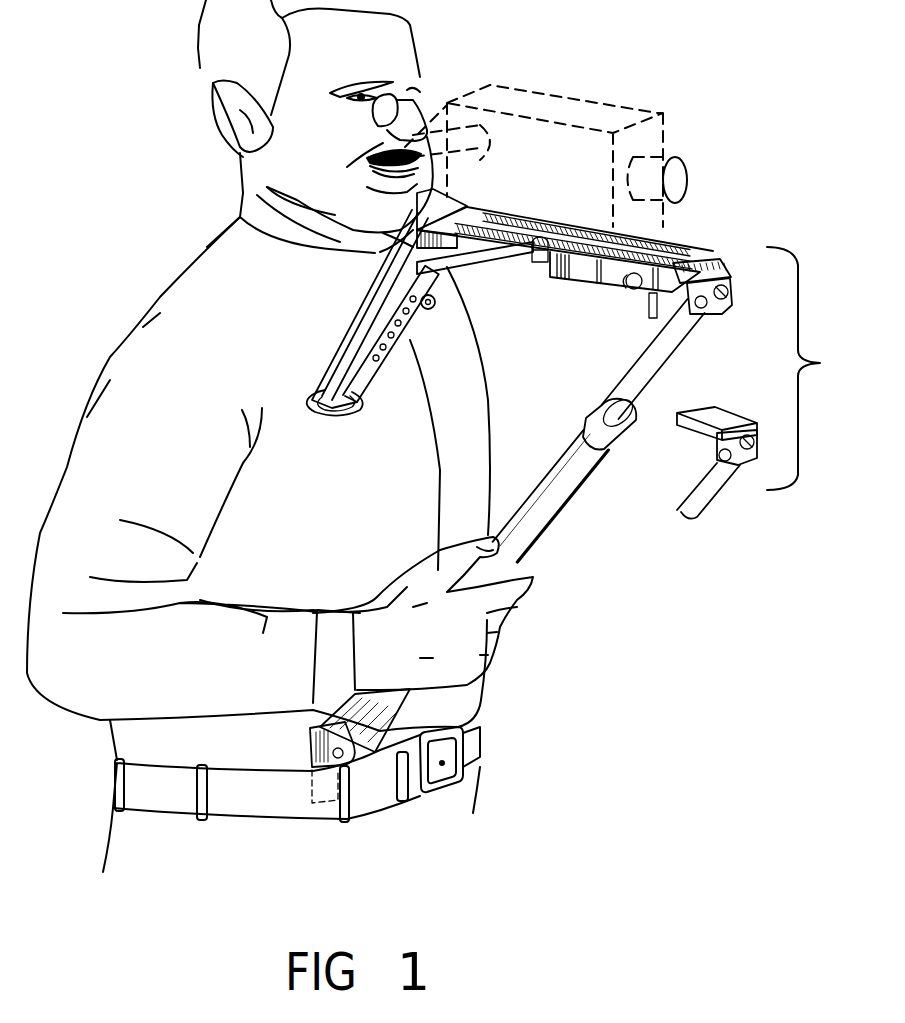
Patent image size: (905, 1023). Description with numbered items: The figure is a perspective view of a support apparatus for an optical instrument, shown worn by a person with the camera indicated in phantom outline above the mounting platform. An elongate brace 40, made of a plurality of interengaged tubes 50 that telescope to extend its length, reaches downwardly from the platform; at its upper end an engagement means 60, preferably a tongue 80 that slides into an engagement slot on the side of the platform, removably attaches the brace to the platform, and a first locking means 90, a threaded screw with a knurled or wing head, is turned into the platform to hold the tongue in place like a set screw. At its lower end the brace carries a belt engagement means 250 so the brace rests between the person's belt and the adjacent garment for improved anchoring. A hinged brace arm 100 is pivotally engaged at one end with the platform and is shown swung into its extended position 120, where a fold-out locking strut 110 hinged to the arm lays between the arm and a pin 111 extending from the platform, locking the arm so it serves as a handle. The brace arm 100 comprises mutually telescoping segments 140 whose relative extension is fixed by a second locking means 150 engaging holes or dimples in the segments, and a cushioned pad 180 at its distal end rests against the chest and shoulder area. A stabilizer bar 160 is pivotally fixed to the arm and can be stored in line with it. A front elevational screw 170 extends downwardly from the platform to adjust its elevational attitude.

The elongate brace 40 is at (628, 446).
The interengaged tubes 50 is at (697, 320).
The engagement means 60 is at (733, 250).
The tongue 80 is at (703, 412).
The first locking means 90 is at (627, 290).
The hinged brace arm 100 is at (351, 327).
The fold-out locking strut 110 is at (455, 272).
The pin 111 is at (543, 260).
The extended position 120 is at (457, 319).
The segments 140 is at (367, 400).
The second locking means 150 is at (427, 311).
The stabilizer bar 160 is at (320, 367).
The cushioned pad 180 is at (313, 413).
The front elevational screw 170 is at (643, 317).
The belt engagement means 250 is at (310, 757).